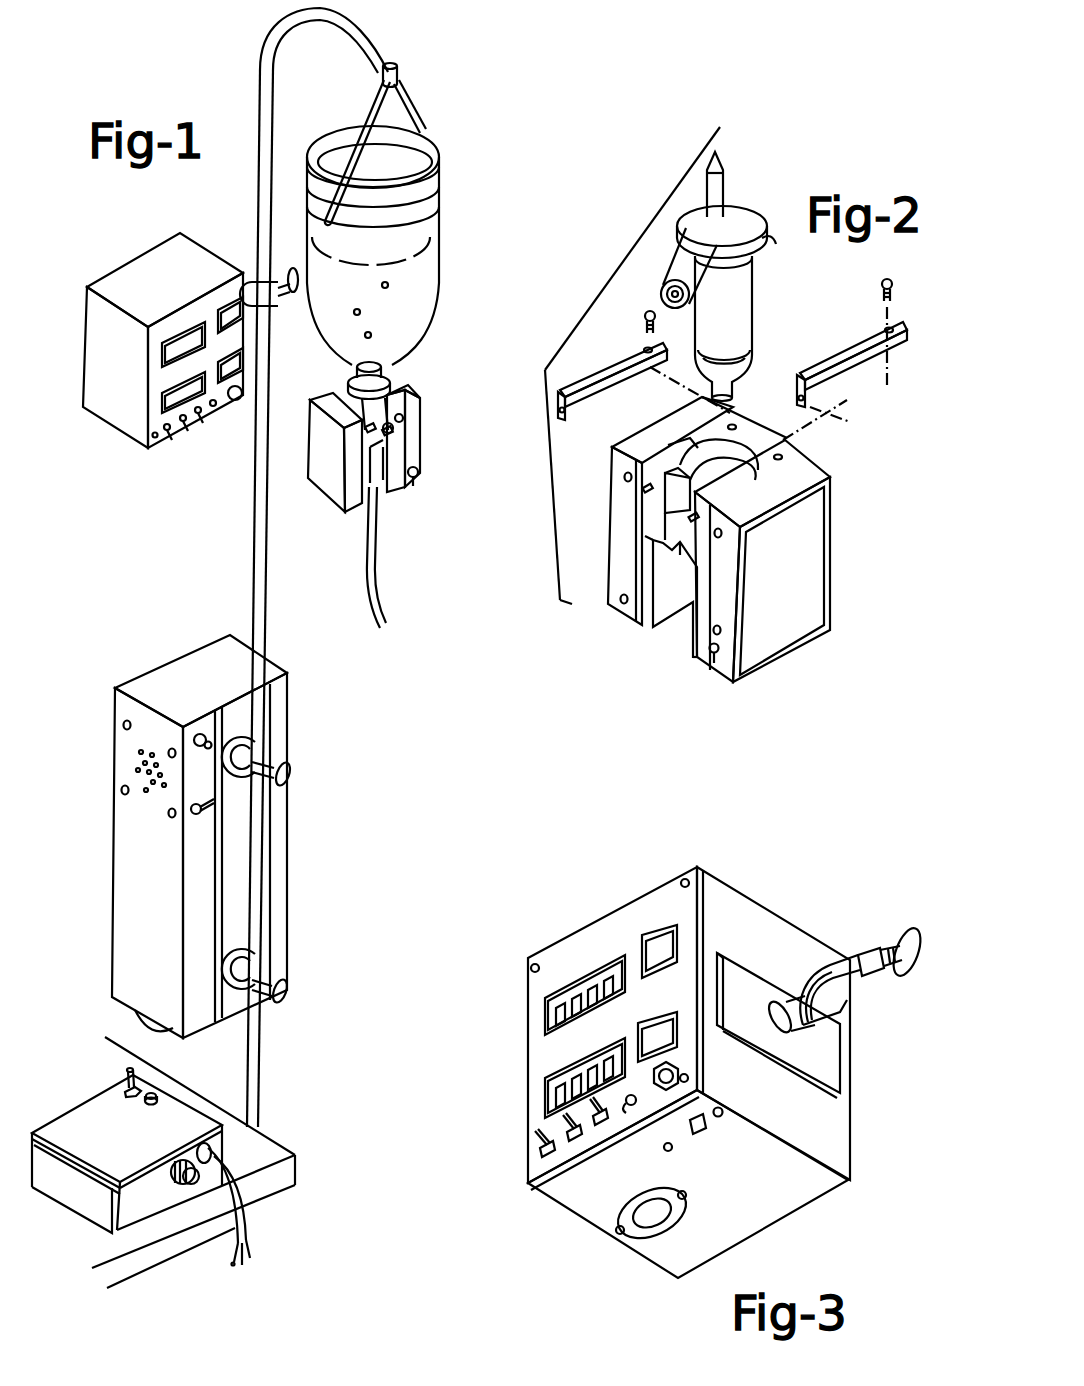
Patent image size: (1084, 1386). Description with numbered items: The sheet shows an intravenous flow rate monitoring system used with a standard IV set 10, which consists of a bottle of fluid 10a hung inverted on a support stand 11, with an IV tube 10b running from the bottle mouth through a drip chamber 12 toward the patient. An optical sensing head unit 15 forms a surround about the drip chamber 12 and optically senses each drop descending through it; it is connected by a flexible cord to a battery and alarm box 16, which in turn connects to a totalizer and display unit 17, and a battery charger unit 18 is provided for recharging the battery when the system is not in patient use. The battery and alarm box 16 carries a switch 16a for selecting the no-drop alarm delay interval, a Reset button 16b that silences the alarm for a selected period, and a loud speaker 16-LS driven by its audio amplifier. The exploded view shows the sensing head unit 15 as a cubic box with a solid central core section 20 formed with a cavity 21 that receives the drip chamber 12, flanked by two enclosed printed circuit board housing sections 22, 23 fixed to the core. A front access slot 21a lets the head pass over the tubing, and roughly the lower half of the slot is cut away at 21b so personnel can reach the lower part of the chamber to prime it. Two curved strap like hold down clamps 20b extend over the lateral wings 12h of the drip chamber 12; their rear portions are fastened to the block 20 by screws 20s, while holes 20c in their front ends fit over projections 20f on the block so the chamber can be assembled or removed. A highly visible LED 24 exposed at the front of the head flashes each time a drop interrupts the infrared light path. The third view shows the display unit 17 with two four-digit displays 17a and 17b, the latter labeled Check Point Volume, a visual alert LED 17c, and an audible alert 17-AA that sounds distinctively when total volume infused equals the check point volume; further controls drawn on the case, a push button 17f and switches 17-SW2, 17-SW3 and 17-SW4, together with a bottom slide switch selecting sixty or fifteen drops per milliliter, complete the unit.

In FIG. 1, the IV set 10 is at (409, 222).
In FIG. 1, the bottle of fluid 10a is at (440, 242).
In FIG. 1, the IV tube 10b is at (377, 563).
In FIG. 1, the support stand 11 is at (253, 565).
In FIG. 1, the drip chamber 12 is at (380, 402).
In FIG. 2, the drip chamber 12 is at (734, 276).
In FIG. 2, the lateral wings 12h is at (686, 220).
In FIG. 1, the optical sensing head unit 15 is at (328, 492).
In FIG. 2, the optical sensing head unit 15 is at (725, 556).
In FIG. 1, the battery and alarm box 16 is at (157, 834).
In FIG. 1, the switch 16a is at (210, 804).
In FIG. 1, the Reset button 16b is at (200, 735).
In FIG. 1, the loud speaker 16-LS is at (135, 768).
In FIG. 1, the totalizer and display unit 17 is at (169, 359).
In FIG. 3, the totalizer and display unit 17 is at (682, 1070).
In FIG. 1, the display 17a is at (170, 352).
In FIG. 3, the display 17a is at (548, 1010).
In FIG. 1, the display 17b is at (170, 400).
In FIG. 3, the display 17b is at (548, 1095).
In FIG. 1, the visual alarm 17c is at (213, 417).
In FIG. 3, the visual alarm 17c is at (628, 1106).
In FIG. 3, the reset button 17f is at (655, 940).
In FIG. 1, the audible alert 17-AA is at (226, 429).
In FIG. 3, the audible alert 17-AA is at (678, 1070).
In FIG. 3, the toggle switch SW2 17-SW2 is at (540, 1145).
In FIG. 3, the toggle switch SW3 17-SW3 is at (572, 1135).
In FIG. 3, the toggle switch SW4 17-SW4 is at (600, 1122).
In FIG. 1, the battery charger unit 18 is at (141, 1159).
In FIG. 2, the solid central core section 20 is at (709, 466).
In FIG. 2, the hold down clamps 20b is at (732, 364).
In FIG. 2, the holes 20c is at (574, 412).
In FIG. 2, the screws 20s is at (647, 309).
In FIG. 2, the projections 20f is at (693, 518).
In FIG. 2, the cavity 21 is at (703, 583).
In FIG. 2, the front access slot 21a is at (680, 547).
In FIG. 2, the cutaway slot portion 21b is at (694, 647).
In FIG. 2, the printed circuit board housing section 22 is at (624, 603).
In FIG. 2, the printed circuit board housing section 23 is at (763, 653).
In FIG. 1, the LED 24 is at (413, 480).
In FIG. 2, the LED 24 is at (714, 660).